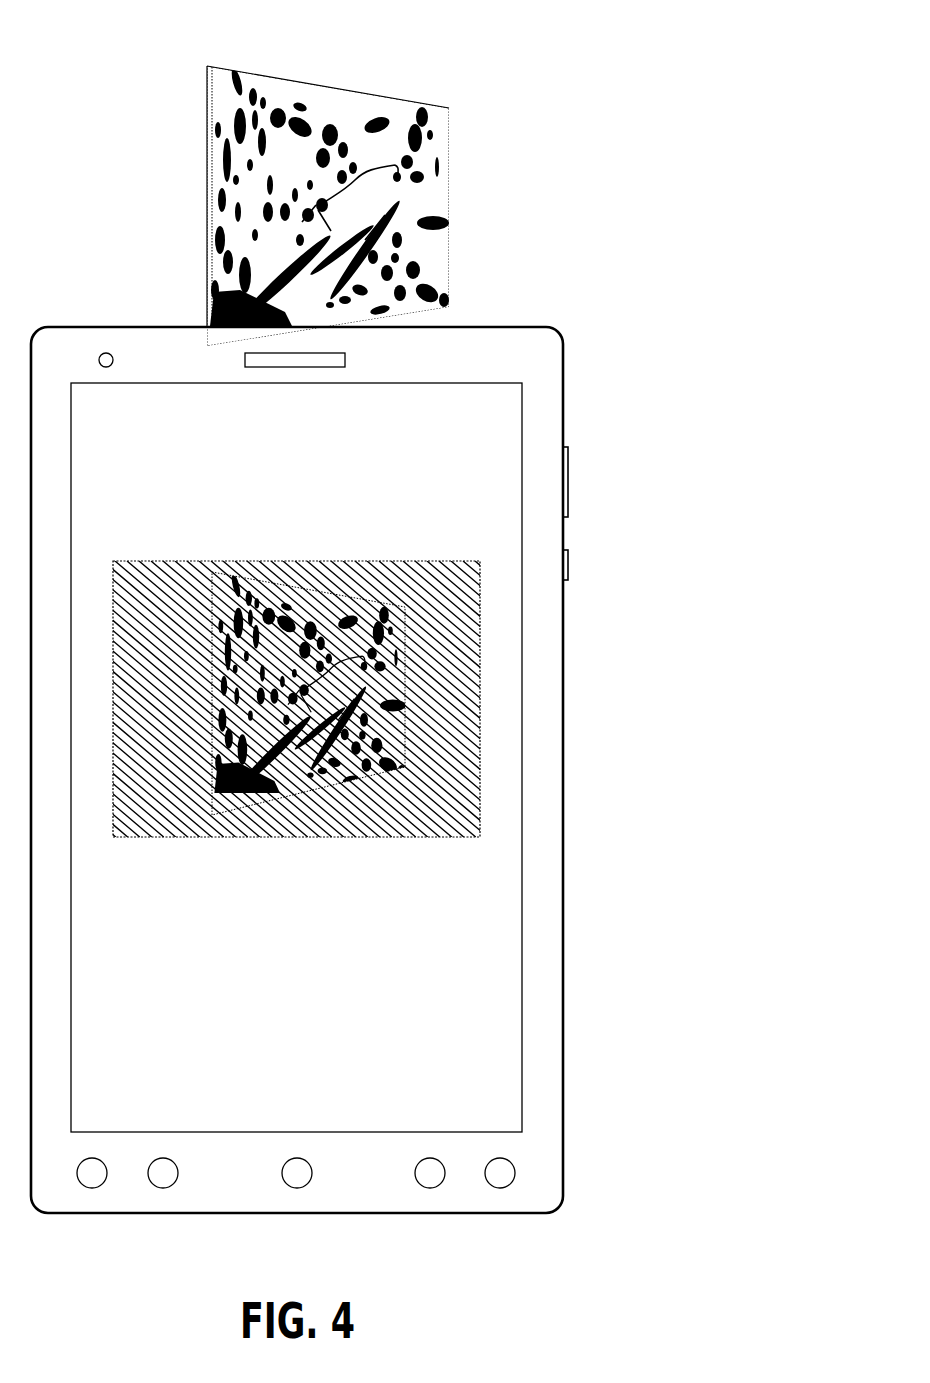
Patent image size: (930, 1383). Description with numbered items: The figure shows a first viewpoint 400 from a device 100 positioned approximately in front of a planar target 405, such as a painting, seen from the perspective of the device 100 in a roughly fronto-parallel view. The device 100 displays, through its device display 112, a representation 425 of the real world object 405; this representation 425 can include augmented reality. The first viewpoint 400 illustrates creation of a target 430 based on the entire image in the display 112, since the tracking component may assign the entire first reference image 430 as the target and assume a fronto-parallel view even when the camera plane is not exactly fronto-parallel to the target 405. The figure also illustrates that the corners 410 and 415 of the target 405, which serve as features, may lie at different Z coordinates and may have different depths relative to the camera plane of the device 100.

The device 100 is at (566, 380).
The device display 112 is at (392, 561).
The first viewpoint 400 is at (624, 68).
The target 405 is at (437, 142).
The corner 410 is at (208, 64).
The corner 415 is at (448, 107).
The representation 425 is at (239, 598).
The target 430 is at (438, 615).